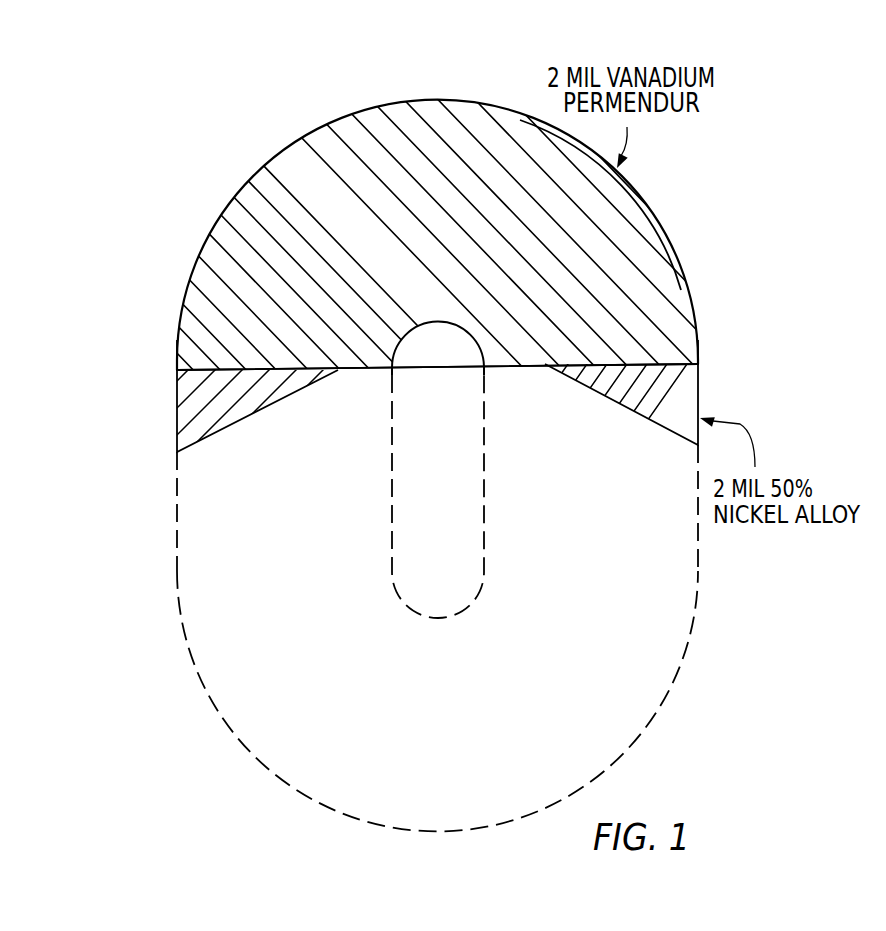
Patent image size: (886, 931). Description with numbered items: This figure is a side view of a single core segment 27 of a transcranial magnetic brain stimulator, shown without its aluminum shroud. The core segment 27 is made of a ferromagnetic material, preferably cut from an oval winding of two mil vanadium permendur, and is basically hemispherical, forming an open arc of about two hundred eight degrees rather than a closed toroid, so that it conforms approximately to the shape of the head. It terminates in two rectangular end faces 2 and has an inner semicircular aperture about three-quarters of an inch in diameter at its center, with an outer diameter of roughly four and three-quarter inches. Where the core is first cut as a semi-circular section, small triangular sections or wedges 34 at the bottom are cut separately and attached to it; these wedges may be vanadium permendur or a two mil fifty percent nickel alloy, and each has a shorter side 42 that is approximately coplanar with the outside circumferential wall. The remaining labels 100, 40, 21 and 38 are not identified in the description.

The magnetic pole piece 100 is at (254, 161).
The core segment 27 is at (168, 255).
The interface 40 is at (177, 340).
The shorter side 42 is at (135, 428).
The triangular sections or wedges 34 is at (240, 466).
The housing 21 is at (305, 464).
The rectangular end faces 2 is at (631, 412).
The slot 38 is at (393, 410).